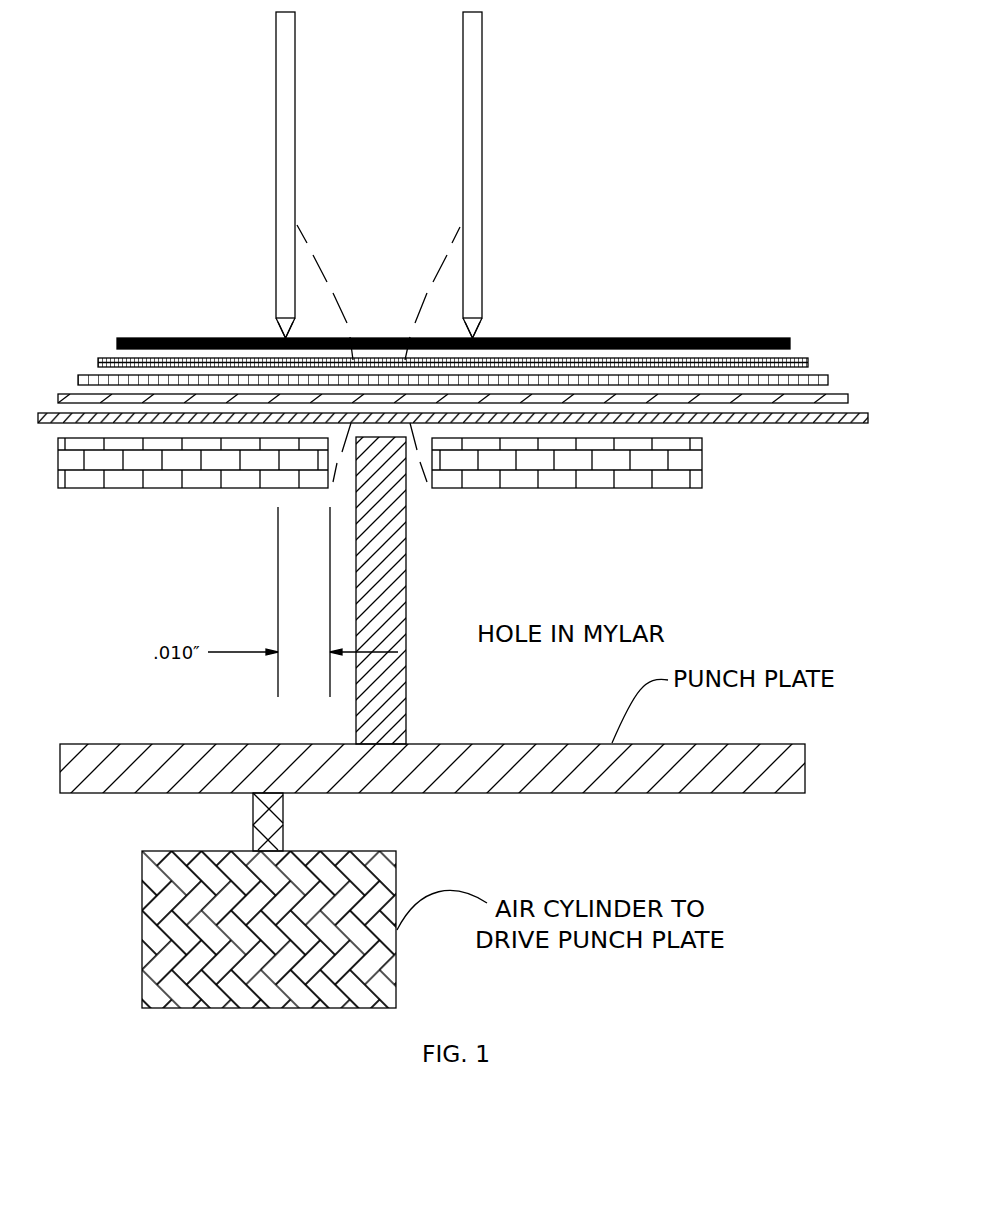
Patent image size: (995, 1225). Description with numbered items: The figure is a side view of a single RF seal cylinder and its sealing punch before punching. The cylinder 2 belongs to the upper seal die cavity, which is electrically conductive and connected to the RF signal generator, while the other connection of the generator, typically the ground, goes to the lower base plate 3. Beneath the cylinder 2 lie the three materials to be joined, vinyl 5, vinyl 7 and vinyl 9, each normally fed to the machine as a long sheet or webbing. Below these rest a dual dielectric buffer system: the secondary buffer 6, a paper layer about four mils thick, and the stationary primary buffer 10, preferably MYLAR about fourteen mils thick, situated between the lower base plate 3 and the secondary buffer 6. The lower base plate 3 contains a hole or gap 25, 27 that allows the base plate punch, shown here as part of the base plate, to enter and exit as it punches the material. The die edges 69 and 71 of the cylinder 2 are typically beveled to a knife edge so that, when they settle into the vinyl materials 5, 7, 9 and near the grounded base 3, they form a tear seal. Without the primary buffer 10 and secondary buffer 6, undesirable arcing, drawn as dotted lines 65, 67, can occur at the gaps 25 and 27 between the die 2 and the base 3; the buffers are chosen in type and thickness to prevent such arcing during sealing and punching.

The cylinder 2 is at (276, 185).
The arc 65 is at (313, 255).
The arc 67 is at (427, 288).
The die edge 69 is at (286, 338).
The die edge 71 is at (476, 338).
The vinyl 5 is at (762, 337).
The vinyl 7 is at (802, 357).
The vinyl 9 is at (820, 374).
The secondary buffer 6 is at (840, 393).
The primary buffer 10 is at (867, 412).
The lower base plate 3 is at (702, 462).
The gap 25 is at (342, 483).
The gap 27 is at (413, 483).